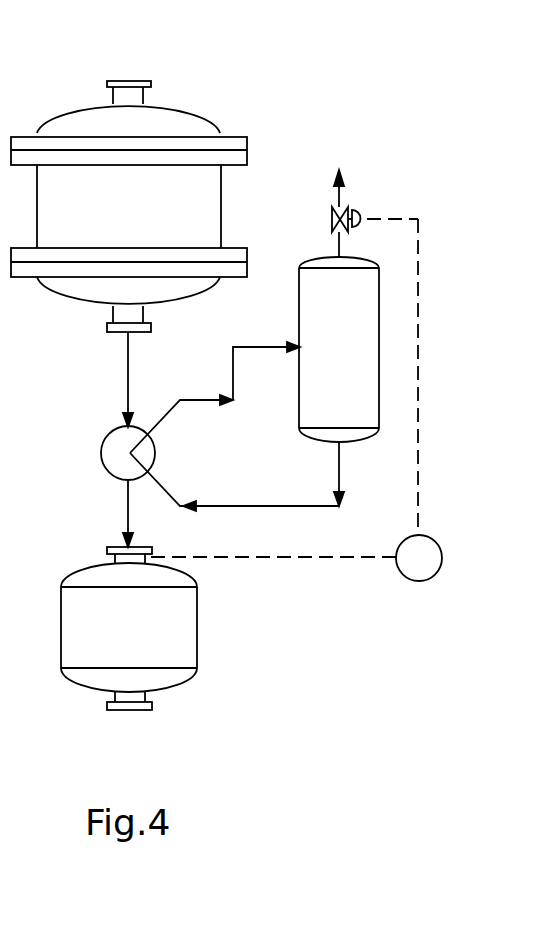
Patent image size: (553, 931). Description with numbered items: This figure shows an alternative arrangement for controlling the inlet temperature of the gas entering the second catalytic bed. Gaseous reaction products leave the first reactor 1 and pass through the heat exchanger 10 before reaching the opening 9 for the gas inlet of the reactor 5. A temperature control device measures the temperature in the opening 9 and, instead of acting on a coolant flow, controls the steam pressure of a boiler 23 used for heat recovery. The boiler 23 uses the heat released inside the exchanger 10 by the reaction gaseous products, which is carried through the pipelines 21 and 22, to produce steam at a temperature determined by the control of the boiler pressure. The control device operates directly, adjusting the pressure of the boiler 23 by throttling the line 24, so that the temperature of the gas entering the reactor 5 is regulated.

The first reactor 1 is at (182, 175).
The reactor 5 is at (185, 620).
The opening for the gas inlet 9 is at (107, 548).
The heat exchanger 10 is at (107, 470).
The pipeline 21 is at (167, 492).
The pipeline 22 is at (180, 400).
The boiler 23 is at (340, 375).
The line 24 is at (339, 191).